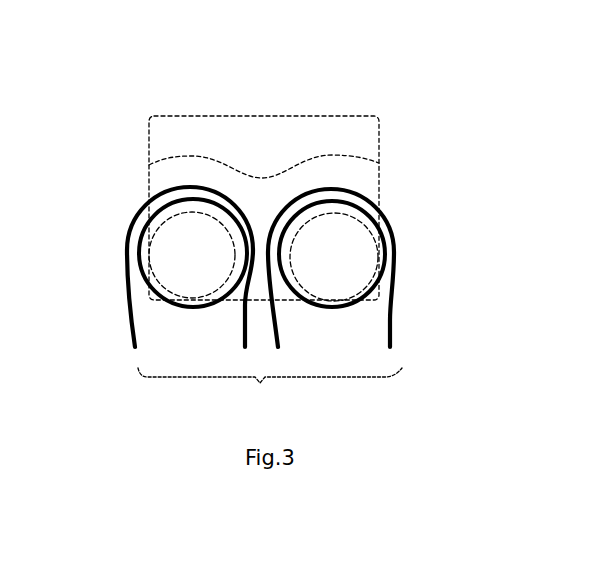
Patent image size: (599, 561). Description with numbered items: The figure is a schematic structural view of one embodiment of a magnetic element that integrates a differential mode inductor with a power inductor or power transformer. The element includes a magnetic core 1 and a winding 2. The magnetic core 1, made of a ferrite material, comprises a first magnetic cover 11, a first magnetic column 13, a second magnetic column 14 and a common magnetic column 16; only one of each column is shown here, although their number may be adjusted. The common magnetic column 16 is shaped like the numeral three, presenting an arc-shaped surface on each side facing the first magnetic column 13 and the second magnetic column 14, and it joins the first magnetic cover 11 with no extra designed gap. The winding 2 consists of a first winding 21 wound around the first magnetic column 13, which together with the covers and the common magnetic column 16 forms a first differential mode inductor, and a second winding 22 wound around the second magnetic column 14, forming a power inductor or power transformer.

The magnetic core 1 is at (269, 74).
The winding 2 is at (270, 392).
The first magnetic cover 11 is at (163, 170).
The first magnetic column 13 is at (170, 260).
The second magnetic column 14 is at (355, 260).
The common magnetic column 16 is at (355, 150).
The first winding 21 is at (137, 343).
The second winding 22 is at (392, 333).